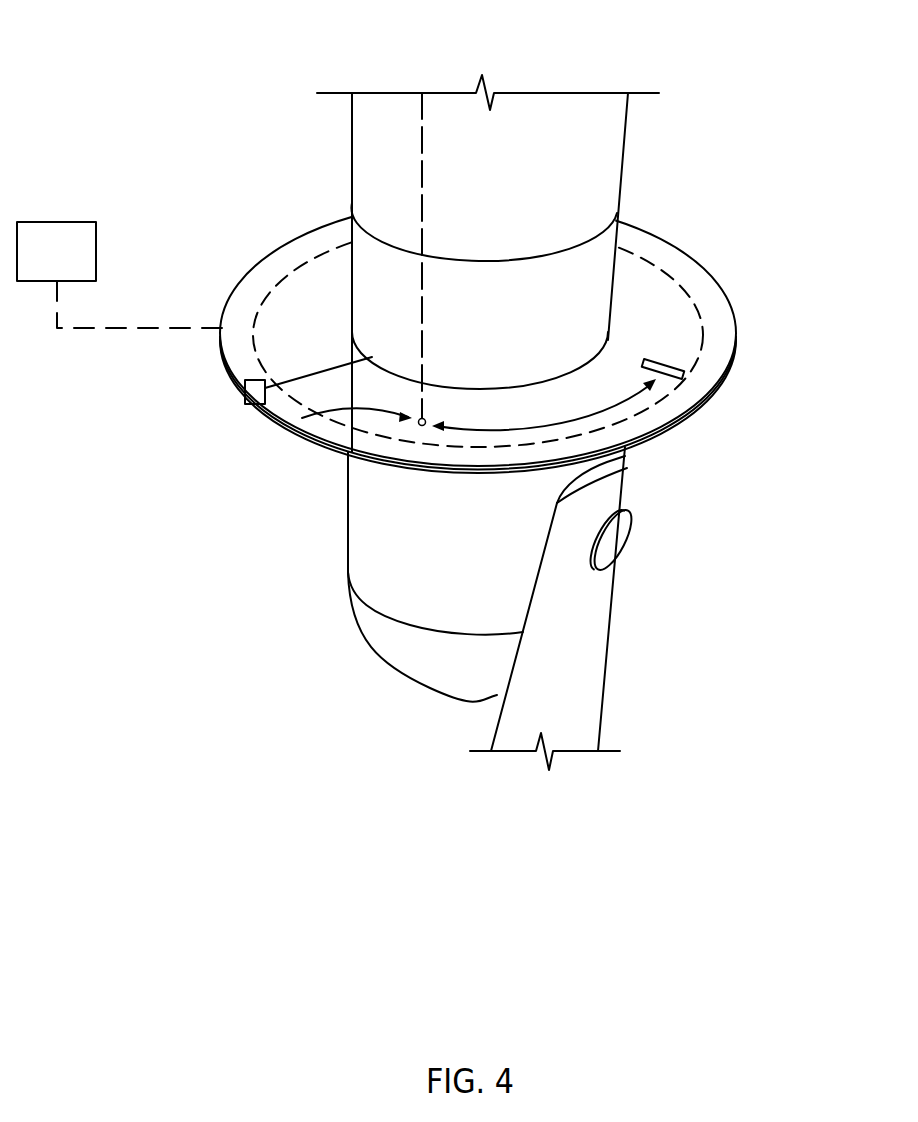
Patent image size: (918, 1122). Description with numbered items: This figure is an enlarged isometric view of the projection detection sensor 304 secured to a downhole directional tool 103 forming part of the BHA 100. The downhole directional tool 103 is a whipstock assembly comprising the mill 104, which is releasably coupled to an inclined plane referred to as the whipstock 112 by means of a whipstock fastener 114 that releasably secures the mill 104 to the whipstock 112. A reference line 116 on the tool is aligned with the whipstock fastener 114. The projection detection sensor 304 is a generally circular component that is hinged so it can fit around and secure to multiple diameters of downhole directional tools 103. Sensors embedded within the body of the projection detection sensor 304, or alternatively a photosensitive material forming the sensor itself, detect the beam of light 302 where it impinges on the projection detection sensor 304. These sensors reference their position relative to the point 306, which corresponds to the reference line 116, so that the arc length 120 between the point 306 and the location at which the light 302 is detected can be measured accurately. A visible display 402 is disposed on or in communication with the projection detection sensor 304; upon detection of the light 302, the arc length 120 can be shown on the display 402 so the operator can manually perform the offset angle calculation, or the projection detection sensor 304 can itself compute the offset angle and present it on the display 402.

The BHA 100 is at (144, 46).
The visible display 402 is at (77, 264).
The projection detection sensor 304 is at (727, 299).
The arc length 120 is at (641, 409).
The beam of light 302 is at (302, 418).
The point 306 is at (667, 361).
The downhole directional tool 103 is at (269, 531).
The mill 104 is at (358, 562).
The whipstock 112 is at (604, 691).
The reference line 116 is at (633, 512).
The whipstock fastener 114 is at (614, 538).